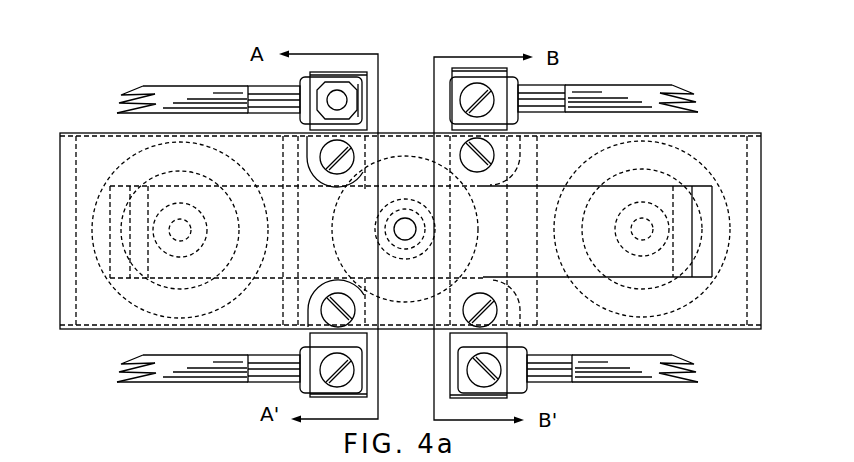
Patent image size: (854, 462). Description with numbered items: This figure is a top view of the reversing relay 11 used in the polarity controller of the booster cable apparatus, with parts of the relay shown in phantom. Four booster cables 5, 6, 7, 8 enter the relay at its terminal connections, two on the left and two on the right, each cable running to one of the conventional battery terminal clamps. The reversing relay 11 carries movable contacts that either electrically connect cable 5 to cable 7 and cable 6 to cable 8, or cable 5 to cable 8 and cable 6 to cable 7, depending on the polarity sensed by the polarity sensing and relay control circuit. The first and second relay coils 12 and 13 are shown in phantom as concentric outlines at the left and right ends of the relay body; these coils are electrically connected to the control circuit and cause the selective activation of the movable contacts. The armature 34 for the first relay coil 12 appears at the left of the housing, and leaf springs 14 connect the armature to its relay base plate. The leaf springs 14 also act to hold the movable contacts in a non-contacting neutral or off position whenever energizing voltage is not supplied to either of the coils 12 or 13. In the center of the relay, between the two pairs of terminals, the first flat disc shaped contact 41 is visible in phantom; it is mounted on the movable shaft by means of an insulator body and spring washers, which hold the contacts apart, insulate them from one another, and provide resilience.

The booster cable 5 is at (200, 92).
The booster cable 6 is at (203, 372).
The booster cable 7 is at (608, 372).
The booster cable 8 is at (611, 96).
The reversing relay 11 is at (405, 63).
The first relay coil 12 is at (140, 295).
The second relay coil 13 is at (677, 292).
The leaf springs 14 is at (703, 205).
The armature 34 is at (97, 162).
The first flat disc shaped contact 41 is at (387, 172).